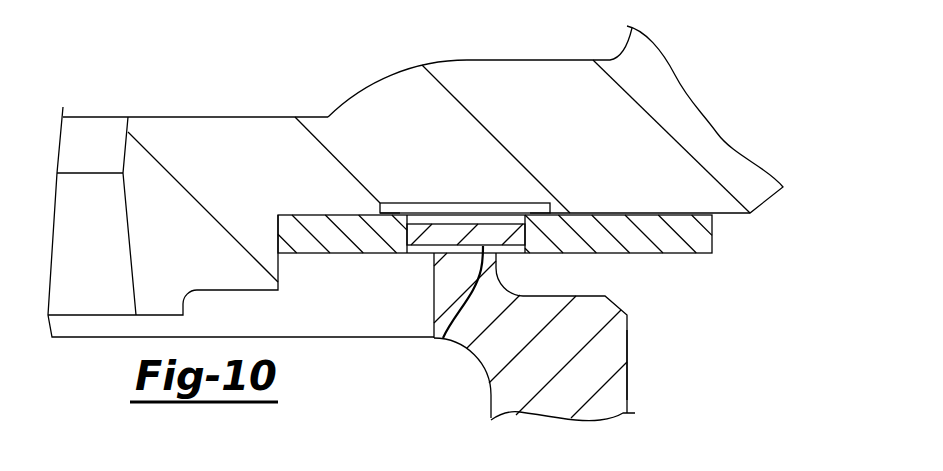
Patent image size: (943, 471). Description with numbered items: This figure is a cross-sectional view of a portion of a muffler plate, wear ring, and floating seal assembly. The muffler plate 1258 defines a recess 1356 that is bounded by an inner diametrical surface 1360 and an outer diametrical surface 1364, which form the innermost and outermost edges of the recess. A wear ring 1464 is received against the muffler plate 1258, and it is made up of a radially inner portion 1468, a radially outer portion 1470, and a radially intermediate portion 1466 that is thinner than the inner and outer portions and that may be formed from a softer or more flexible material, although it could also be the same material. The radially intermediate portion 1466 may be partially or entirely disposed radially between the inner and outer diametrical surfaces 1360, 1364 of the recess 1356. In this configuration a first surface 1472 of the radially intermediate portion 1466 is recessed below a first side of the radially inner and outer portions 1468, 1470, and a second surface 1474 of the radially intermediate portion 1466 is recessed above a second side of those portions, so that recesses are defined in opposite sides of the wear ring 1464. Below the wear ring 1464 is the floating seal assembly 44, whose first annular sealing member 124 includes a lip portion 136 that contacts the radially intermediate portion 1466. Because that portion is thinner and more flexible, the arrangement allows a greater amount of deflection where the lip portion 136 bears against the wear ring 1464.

The muffler plate 1258 is at (177, 108).
The recess 1356 is at (472, 113).
The inner diametrical surface 1360 is at (385, 212).
The outer diametrical surface 1364 is at (548, 211).
The wear ring 1464 is at (550, 155).
The radially inner portion 1468 is at (340, 225).
The radially outer portion 1470 is at (652, 222).
The radially intermediate portion 1466 is at (466, 159).
The first surface 1472 is at (445, 232).
The floating seal assembly 44 is at (531, 333).
The lip portion 136 is at (434, 279).
The second surface 1474 is at (443, 338).
The first annular sealing member 124 is at (613, 345).